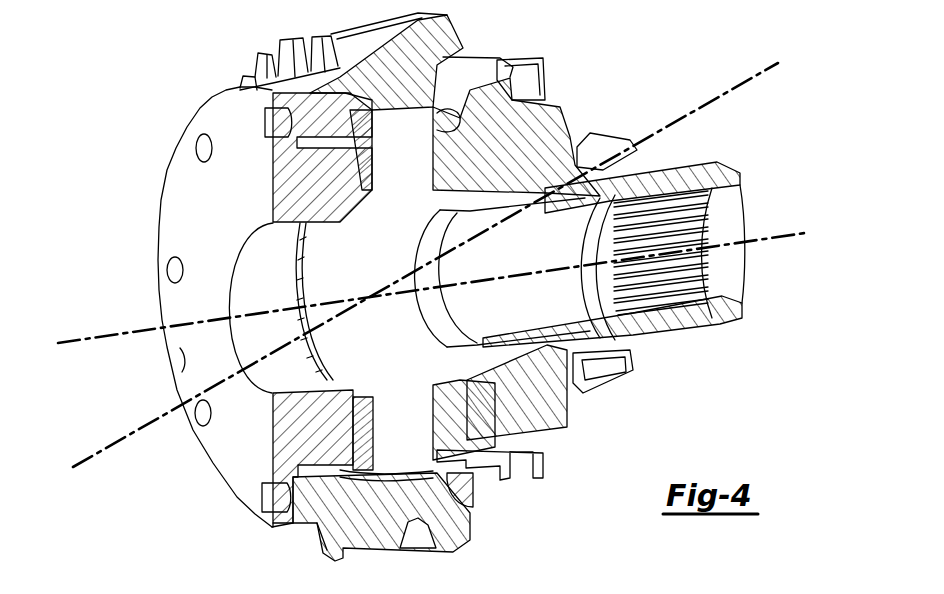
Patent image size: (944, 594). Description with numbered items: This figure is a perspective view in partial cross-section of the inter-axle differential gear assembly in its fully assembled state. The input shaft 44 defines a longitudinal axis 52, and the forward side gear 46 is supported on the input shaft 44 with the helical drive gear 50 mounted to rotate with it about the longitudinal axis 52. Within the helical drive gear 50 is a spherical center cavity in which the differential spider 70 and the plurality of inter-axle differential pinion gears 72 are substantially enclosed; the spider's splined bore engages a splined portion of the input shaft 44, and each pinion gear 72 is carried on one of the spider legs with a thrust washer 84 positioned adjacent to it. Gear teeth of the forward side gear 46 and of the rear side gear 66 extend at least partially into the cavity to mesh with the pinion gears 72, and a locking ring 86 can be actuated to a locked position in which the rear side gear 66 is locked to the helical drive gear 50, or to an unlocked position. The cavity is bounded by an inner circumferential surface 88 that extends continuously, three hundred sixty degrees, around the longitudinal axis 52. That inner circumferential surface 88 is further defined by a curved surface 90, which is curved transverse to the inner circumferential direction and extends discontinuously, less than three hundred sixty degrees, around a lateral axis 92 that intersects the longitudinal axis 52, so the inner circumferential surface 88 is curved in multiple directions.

The input shaft 44 is at (633, 356).
The forward side gear 46 is at (182, 372).
The helical drive gear 50 is at (258, 75).
The longitudinal axis 52 is at (770, 231).
The rear side gear 66 is at (567, 422).
The differential spider 70 is at (363, 240).
The inter-axle differential pinion gears 72 is at (483, 150).
The thrust washer 84 is at (368, 124).
The locking ring 86 is at (545, 454).
The inner circumferential surface 88 is at (315, 526).
The curved surface 90 is at (438, 131).
The lateral axis 92 is at (733, 90).